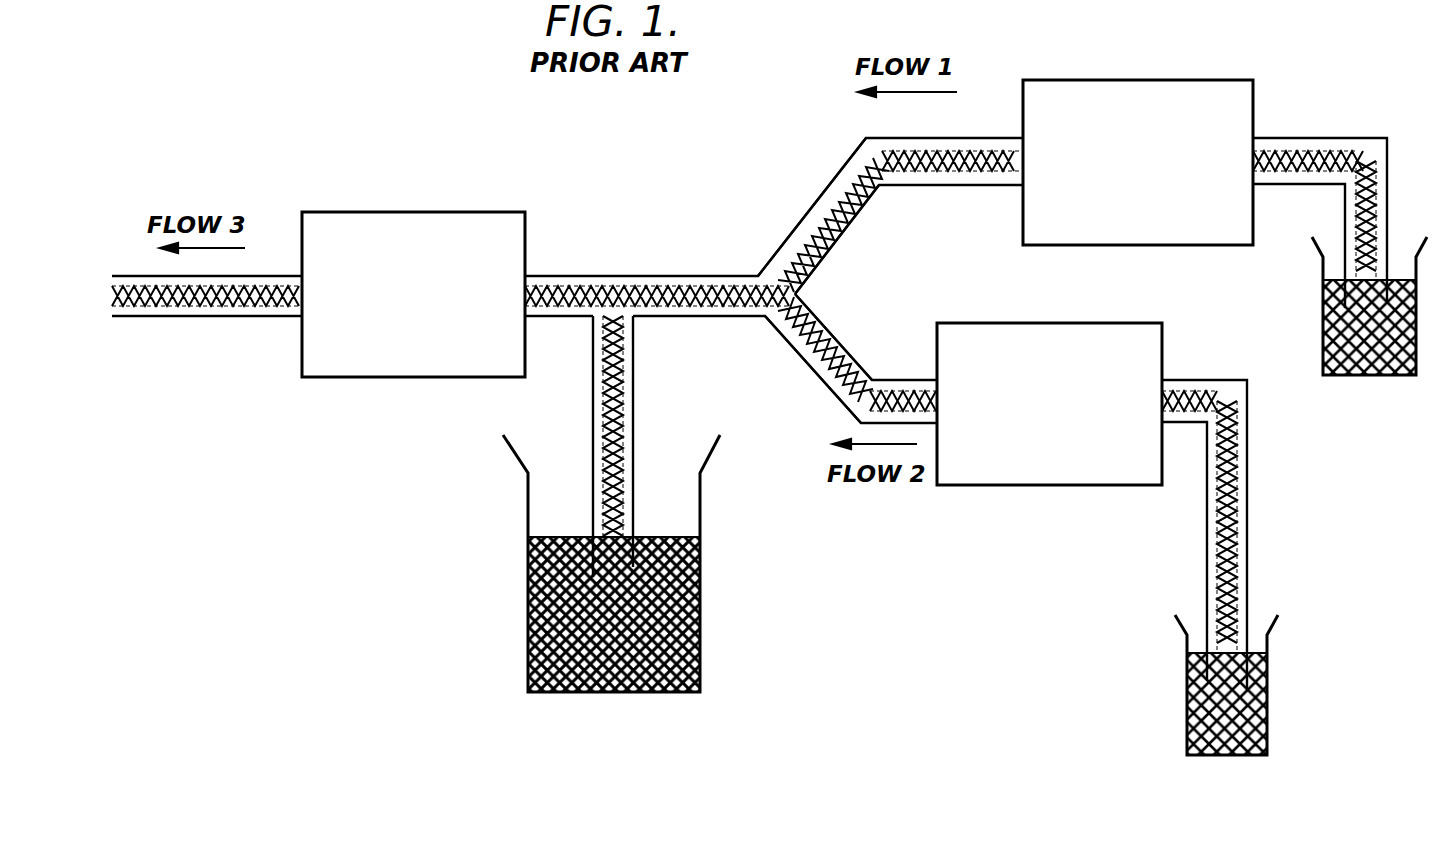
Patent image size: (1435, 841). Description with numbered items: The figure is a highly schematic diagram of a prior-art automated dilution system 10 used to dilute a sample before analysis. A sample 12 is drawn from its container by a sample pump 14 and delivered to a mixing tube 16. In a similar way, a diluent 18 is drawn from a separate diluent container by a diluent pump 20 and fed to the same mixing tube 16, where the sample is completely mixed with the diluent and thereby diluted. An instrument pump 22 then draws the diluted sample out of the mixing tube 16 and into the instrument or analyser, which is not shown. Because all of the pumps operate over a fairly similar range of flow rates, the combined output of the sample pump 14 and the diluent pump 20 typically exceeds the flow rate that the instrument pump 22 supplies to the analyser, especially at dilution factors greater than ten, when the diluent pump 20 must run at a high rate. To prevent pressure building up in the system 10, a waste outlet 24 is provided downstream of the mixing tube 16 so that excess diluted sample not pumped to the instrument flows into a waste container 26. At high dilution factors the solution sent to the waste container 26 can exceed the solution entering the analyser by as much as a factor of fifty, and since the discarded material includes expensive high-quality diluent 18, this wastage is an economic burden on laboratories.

The automated dilution system 10 is at (368, 566).
The sample 12 is at (1323, 320).
The sample pump 14 is at (1105, 80).
The mixing tube 16 is at (822, 258).
The diluent 18 is at (1267, 700).
The diluent pump 20 is at (975, 485).
The instrument pump 22 is at (388, 212).
The waste outlet 24 is at (633, 402).
The waste container 26 is at (700, 633).